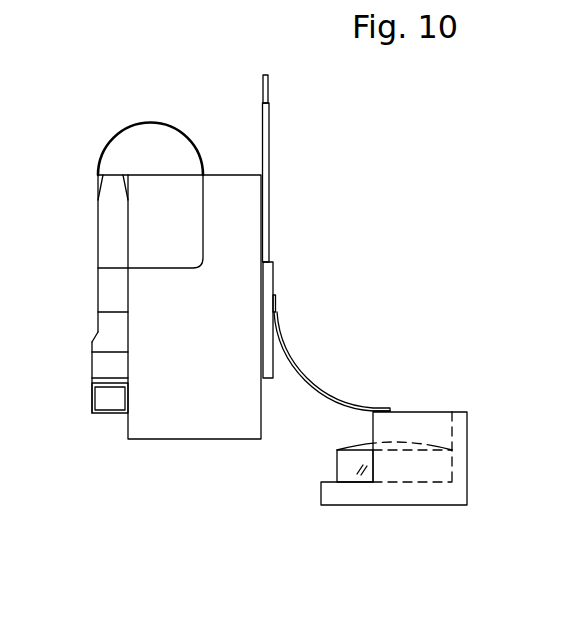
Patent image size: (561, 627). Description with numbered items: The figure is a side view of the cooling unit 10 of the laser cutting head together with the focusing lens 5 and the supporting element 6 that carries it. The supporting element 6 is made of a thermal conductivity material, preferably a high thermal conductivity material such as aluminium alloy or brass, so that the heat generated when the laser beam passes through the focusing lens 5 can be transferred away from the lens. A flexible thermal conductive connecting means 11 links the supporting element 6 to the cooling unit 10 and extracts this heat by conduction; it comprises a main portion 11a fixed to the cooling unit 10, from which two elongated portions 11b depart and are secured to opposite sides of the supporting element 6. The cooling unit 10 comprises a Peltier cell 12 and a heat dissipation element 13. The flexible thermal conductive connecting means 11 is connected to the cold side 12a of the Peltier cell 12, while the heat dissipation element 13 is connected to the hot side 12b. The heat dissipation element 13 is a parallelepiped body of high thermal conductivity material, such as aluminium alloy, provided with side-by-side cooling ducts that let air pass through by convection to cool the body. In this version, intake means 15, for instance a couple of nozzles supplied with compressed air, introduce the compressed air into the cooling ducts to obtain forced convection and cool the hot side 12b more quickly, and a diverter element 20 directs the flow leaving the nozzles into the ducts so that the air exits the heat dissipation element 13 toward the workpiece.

The cooling unit 10 is at (88, 458).
The thermal conductive connecting means 11 is at (315, 393).
The main portion 11a is at (275, 310).
The elongated portions 11b is at (378, 410).
The Peltier cell 12 is at (262, 263).
The cold side 12a is at (273, 278).
The hot side 12b is at (263, 306).
The heat dissipation element 13 is at (222, 203).
The intake means 15 is at (102, 325).
The diverter element 20 is at (137, 140).
The focusing lens 5 is at (348, 462).
The supporting element 6 is at (398, 493).